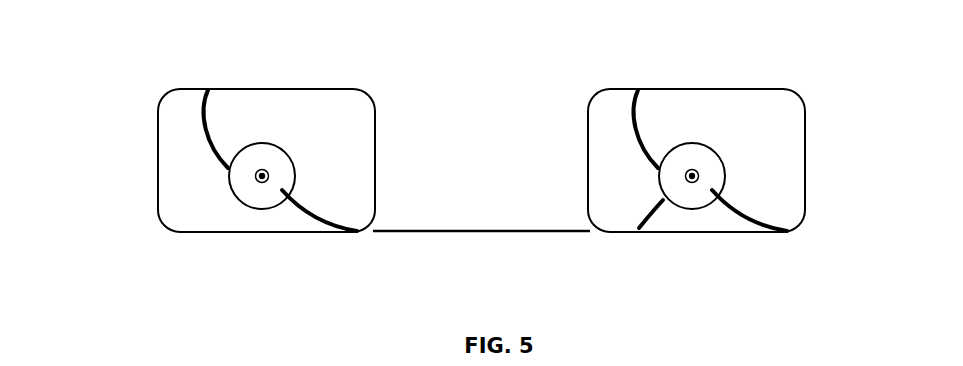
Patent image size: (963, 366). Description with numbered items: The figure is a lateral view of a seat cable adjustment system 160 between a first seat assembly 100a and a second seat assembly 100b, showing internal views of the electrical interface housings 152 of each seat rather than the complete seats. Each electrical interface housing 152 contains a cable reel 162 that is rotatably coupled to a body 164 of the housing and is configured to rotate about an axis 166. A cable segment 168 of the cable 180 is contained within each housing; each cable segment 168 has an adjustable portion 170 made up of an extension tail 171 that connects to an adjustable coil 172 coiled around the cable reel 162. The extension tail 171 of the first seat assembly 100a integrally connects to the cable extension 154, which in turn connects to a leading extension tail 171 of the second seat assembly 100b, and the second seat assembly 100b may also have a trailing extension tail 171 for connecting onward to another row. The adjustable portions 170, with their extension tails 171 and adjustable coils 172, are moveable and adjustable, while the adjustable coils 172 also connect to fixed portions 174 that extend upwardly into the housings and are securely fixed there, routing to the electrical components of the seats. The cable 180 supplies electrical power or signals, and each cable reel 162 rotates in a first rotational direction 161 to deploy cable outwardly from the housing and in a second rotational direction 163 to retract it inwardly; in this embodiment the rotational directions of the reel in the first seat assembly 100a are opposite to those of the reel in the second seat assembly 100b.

The first seat assembly 100a is at (165, 75).
The second seat assembly 100b is at (808, 77).
The seat cable adjustment system 160 is at (108, 122).
The electrical interface housing 152 is at (158, 213).
The cable extension 154 is at (468, 231).
The first rotational direction 161 is at (298, 138).
The cable reel 162 is at (262, 178).
The second rotational direction 163 is at (224, 138).
The body 164 is at (338, 144).
The axis 166 is at (262, 176).
The cable segment 168 is at (293, 214).
The adjustable portion 170 is at (329, 234).
The extension tail 171 is at (332, 230).
The adjustable coil 172 is at (283, 190).
The fixed portion 174 is at (205, 145).
The cable 180 is at (481, 220).